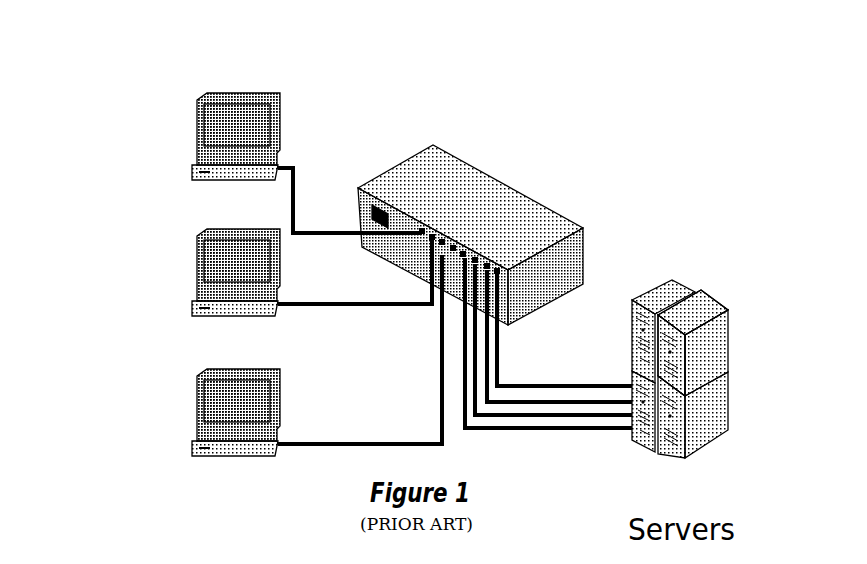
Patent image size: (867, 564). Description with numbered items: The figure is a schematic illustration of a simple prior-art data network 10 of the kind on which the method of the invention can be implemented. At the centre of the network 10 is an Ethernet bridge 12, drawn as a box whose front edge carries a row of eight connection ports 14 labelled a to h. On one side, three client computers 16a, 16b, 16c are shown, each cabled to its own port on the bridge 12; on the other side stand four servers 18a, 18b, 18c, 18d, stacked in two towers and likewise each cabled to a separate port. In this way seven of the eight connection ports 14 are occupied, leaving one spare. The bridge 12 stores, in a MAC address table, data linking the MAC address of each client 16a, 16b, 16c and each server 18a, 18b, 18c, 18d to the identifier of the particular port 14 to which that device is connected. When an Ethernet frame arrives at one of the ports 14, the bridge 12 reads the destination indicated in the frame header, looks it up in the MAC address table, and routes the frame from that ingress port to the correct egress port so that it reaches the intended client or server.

The data network 10 is at (100, 75).
The Ethernet bridge 12 is at (521, 182).
The connection ports 14 is at (495, 260).
The client computer 16a is at (172, 116).
The client computer 16b is at (172, 248).
The client computer 16c is at (172, 382).
The server 18a is at (631, 291).
The server 18b is at (714, 298).
The server 18c is at (635, 442).
The server 18d is at (735, 423).